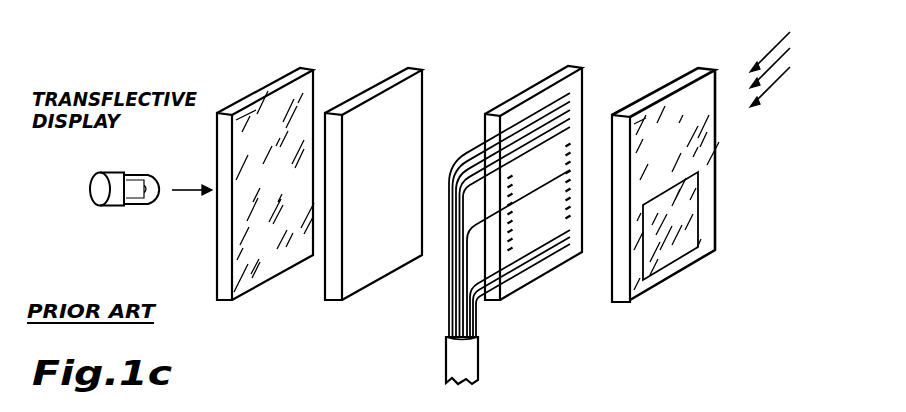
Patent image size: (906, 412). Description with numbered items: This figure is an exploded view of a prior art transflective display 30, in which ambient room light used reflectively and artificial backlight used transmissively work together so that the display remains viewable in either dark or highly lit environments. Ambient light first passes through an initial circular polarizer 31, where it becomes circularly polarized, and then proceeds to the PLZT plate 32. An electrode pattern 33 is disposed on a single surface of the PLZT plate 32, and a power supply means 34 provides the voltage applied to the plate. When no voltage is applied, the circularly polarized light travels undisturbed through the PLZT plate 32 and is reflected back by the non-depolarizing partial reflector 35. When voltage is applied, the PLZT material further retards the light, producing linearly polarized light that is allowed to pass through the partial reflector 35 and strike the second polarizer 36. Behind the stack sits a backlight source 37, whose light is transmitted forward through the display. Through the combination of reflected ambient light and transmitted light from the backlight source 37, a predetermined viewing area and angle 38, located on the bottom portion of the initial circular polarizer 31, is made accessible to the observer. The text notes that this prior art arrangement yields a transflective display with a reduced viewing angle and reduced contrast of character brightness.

The transflective display 30 is at (718, 25).
The initial circular polarizer 31 is at (715, 165).
The PLZT plate 32 is at (577, 82).
The electrode pattern 33 is at (572, 104).
The power supply means 34 is at (470, 357).
The non-depolarizing partial reflector 35 is at (415, 100).
The second polarizer 36 is at (313, 78).
The backlight source 37 is at (147, 206).
The viewing area and angle 38 is at (695, 242).